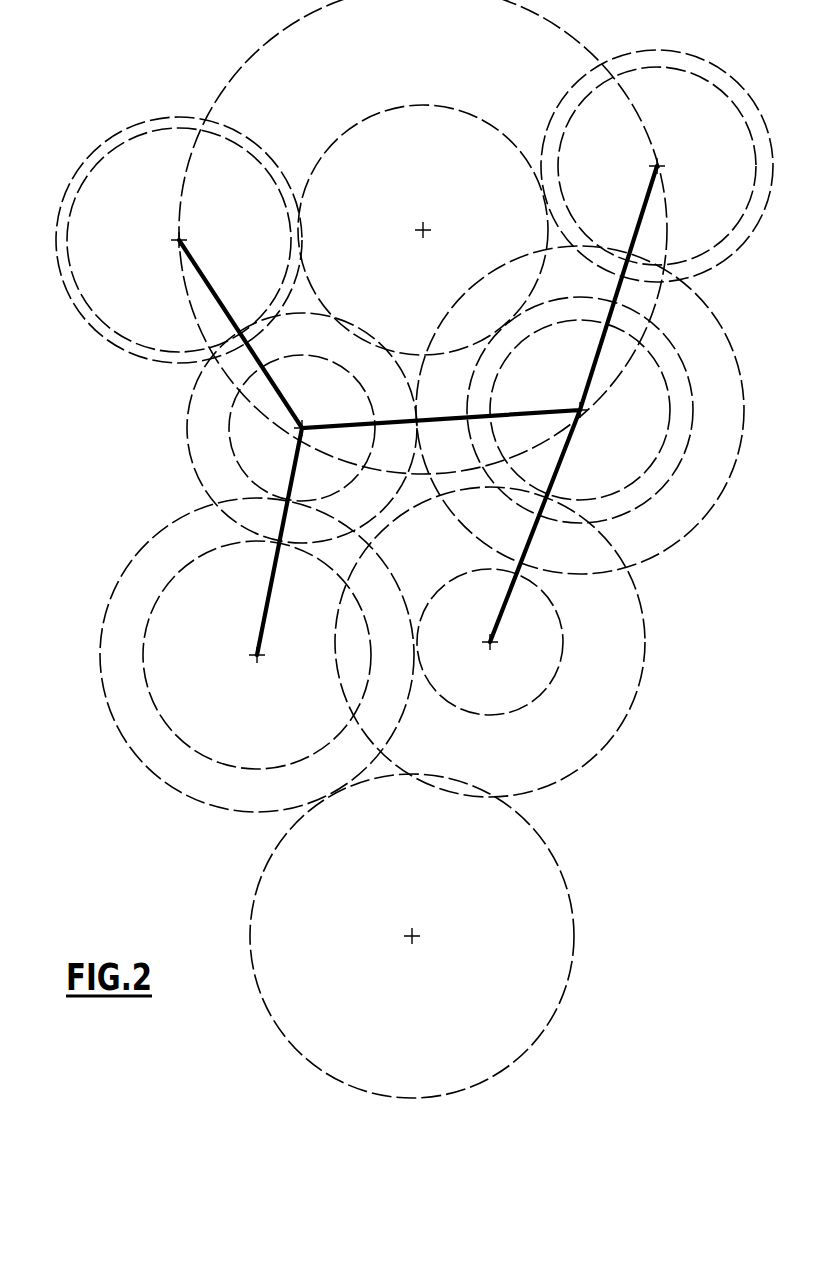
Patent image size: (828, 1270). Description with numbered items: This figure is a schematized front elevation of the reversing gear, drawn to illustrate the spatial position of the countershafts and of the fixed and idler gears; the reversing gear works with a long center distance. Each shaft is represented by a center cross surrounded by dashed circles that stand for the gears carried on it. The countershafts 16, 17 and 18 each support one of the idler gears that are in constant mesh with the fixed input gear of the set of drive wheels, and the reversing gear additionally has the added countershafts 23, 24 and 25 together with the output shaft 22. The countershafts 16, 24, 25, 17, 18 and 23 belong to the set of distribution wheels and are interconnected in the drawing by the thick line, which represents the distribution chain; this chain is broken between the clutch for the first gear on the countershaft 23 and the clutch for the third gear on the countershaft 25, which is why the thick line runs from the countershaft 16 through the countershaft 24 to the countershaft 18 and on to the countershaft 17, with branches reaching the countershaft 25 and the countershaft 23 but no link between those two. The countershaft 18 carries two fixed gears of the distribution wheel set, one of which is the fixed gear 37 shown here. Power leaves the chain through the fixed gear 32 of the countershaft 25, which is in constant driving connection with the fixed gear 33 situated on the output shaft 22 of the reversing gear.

The countershaft 16 is at (175, 244).
The countershaft 17 is at (662, 170).
The countershaft 18 is at (584, 414).
The output shaft 22 is at (395, 936).
The countershaft 23 is at (494, 645).
The countershaft 24 is at (299, 431).
The countershaft 25 is at (246, 655).
The fixed gear 37 is at (420, 228).
The fixed gear 32 is at (142, 763).
The fixed gear 33 is at (278, 1027).